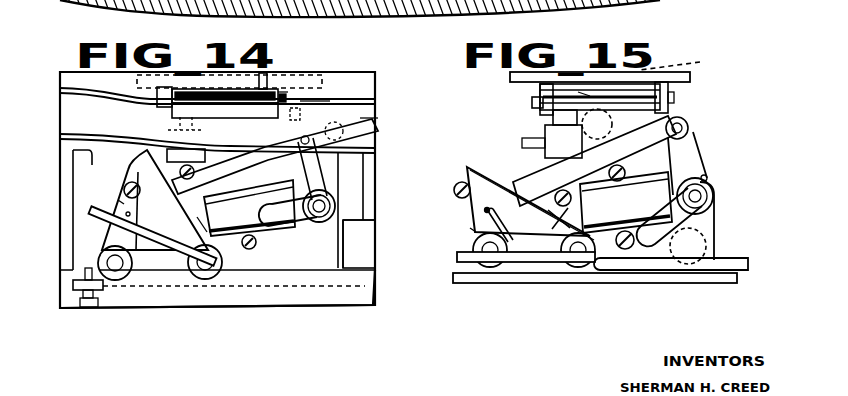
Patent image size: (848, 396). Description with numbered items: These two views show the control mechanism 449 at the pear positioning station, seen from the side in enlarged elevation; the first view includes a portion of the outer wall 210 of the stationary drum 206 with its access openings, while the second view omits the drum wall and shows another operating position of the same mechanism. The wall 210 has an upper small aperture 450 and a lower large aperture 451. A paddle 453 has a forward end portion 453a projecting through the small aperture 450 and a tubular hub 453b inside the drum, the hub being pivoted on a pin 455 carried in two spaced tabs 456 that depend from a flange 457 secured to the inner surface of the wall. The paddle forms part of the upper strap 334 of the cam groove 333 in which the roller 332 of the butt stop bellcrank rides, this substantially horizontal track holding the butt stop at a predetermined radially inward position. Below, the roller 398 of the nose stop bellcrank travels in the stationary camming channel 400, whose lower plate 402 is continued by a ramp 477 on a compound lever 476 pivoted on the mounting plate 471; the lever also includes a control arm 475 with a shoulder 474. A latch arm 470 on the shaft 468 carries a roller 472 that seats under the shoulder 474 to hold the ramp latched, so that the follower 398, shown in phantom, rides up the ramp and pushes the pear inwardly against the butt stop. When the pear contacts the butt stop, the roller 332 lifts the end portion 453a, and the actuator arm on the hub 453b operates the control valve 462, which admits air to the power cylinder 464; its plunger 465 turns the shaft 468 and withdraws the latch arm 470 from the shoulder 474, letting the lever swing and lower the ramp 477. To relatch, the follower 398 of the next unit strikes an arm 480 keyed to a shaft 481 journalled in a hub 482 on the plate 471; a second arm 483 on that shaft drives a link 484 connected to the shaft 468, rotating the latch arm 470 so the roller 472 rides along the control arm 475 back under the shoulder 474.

In FIG. 14, the cylindrical drum 206 is at (378, 158).
In FIG. 14, the outer wall 210 is at (331, 300).
In FIG. 15, the roller 332 is at (688, 64).
In FIG. 14, the cam groove 333 is at (362, 138).
In FIG. 14, the horizontal strap 334 is at (335, 108).
In FIG. 14, the roller 398 is at (290, 250).
In FIG. 15, the roller 398 is at (662, 253).
In FIG. 14, the stationary camming channel 400 is at (376, 228).
In FIG. 14, the horizontal plate 402 is at (378, 270).
In FIG. 15, the horizontal plate 402 is at (730, 262).
In FIG. 14, the control mechanism 449 is at (368, 123).
In FIG. 15, the control mechanism 449 is at (700, 142).
In FIG. 14, the upper small aperture 450 is at (250, 116).
In FIG. 14, the lower large aperture 451 is at (57, 172).
In FIG. 14, the paddle 453 is at (223, 114).
In FIG. 15, the paddle 453 is at (538, 98).
In FIG. 14, the forward end portion 453a is at (283, 93).
In FIG. 15, the forward end portion 453a is at (580, 92).
In FIG. 14, the tubular hub 453b is at (204, 79).
In FIG. 15, the tubular hub 453b is at (620, 124).
In FIG. 14, the pin 455 is at (157, 113).
In FIG. 15, the pin 455 is at (532, 102).
In FIG. 14, the tabs 456 is at (167, 122).
In FIG. 15, the tabs 456 is at (540, 110).
In FIG. 14, the flange 457 is at (322, 80).
In FIG. 15, the flange 457 is at (517, 77).
In FIG. 14, the control valve 462 is at (186, 156).
In FIG. 15, the control valve 462 is at (578, 150).
In FIG. 14, the power cylinder 464 is at (247, 219).
In FIG. 15, the power cylinder 464 is at (627, 215).
In FIG. 14, the plunger 465 is at (197, 217).
In FIG. 15, the plunger 465 is at (563, 218).
In FIG. 14, the shaft 468 is at (114, 264).
In FIG. 15, the shaft 468 is at (491, 262).
In FIG. 14, the latch arm 470 is at (128, 214).
In FIG. 15, the latch arm 470 is at (472, 216).
In FIG. 15, the mounting plate 471 is at (457, 280).
In FIG. 14, the roller 472 is at (122, 202).
In FIG. 15, the roller 472 is at (462, 190).
In FIG. 14, the shoulder 474 is at (137, 176).
In FIG. 15, the shoulder 474 is at (468, 228).
In FIG. 14, the control arm 475 is at (173, 212).
In FIG. 15, the control arm 475 is at (533, 222).
In FIG. 14, the compound lever 476 is at (167, 266).
In FIG. 15, the compound lever 476 is at (548, 270).
In FIG. 14, the ramp 477 is at (88, 211).
In FIG. 15, the ramp 477 is at (456, 258).
In FIG. 14, the arm 480 is at (300, 217).
In FIG. 15, the arm 480 is at (682, 230).
In FIG. 14, the shaft 481 is at (320, 210).
In FIG. 15, the shaft 481 is at (700, 195).
In FIG. 14, the hub 482 is at (340, 185).
In FIG. 15, the hub 482 is at (705, 178).
In FIG. 14, the second arm 483 is at (335, 180).
In FIG. 15, the second arm 483 is at (695, 169).
In FIG. 14, the link 484 is at (255, 174).
In FIG. 15, the link 484 is at (597, 175).